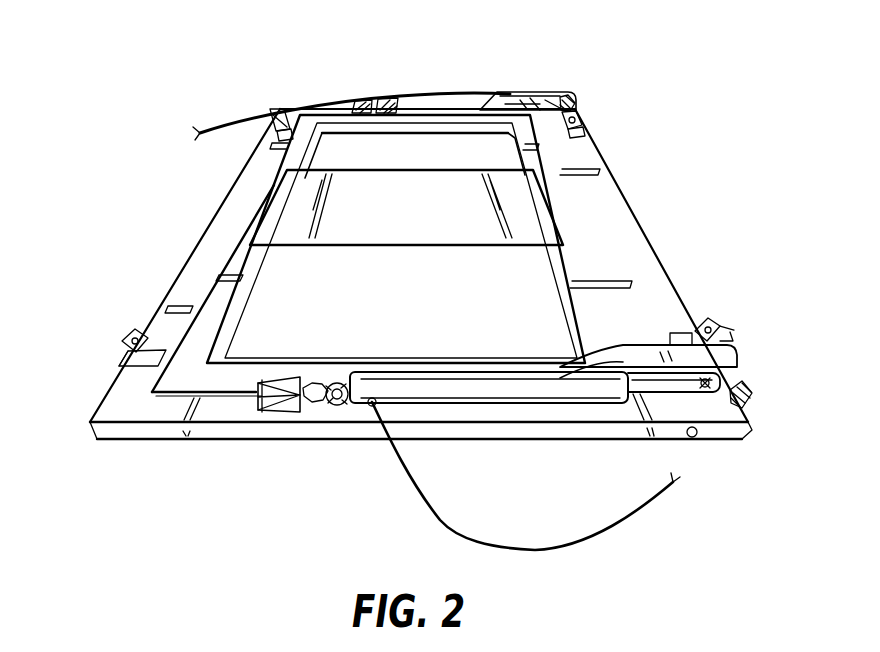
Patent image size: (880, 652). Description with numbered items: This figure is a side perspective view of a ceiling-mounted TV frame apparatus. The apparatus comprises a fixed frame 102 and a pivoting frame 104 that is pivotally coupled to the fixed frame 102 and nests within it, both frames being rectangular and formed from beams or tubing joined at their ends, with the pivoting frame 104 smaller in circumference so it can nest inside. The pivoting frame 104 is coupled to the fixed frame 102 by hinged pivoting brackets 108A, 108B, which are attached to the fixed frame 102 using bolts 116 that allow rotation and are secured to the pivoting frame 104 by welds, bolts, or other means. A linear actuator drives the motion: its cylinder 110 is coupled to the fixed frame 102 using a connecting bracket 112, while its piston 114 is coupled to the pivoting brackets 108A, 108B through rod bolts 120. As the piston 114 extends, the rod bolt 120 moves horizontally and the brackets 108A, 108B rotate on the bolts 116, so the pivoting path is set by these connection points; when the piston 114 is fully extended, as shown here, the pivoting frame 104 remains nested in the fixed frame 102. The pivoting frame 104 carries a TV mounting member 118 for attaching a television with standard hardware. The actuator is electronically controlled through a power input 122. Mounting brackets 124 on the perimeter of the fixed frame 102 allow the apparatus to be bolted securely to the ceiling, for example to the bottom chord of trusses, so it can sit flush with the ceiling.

The fixed frame 102 is at (202, 241).
The pivoting frame 104 is at (589, 308).
The pivoting bracket 108A is at (728, 356).
The pivoting bracket 108B is at (518, 107).
The cylinder 110 is at (468, 95).
The connecting bracket 112 is at (288, 407).
The piston 114 is at (706, 386).
The bolt 116 is at (695, 435).
The TV mounting member 118 is at (421, 222).
The rod bolt 120 is at (573, 101).
The power input 122 is at (414, 481).
The mounting bracket 124 is at (273, 122).